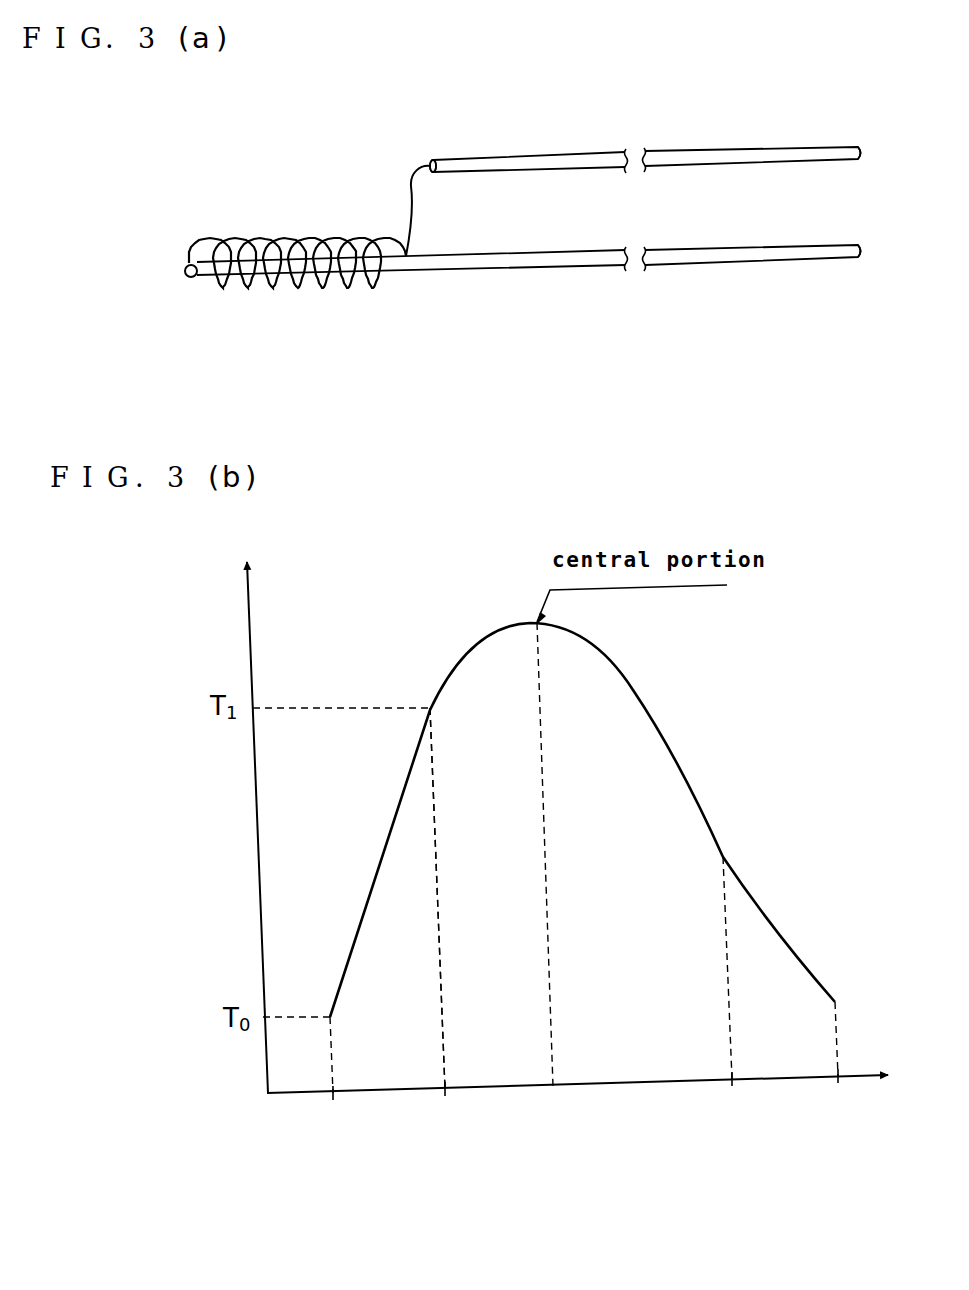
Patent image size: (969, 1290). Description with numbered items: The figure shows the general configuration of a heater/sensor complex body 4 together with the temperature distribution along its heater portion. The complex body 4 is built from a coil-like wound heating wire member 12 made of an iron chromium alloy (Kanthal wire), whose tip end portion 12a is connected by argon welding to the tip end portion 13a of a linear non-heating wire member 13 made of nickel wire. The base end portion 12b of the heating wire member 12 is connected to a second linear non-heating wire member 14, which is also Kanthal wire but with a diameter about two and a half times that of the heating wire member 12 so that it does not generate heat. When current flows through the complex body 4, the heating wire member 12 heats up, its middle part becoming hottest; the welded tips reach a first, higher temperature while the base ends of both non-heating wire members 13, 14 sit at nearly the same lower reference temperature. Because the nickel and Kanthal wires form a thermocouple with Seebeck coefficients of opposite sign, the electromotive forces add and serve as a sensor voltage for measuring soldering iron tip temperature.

The heater/sensor complex body 4 is at (548, 390).
The heating wire member 12 is at (188, 264).
The tip end portion of the heating wire member 12a is at (447, 936).
The base end portion of the heating wire member 12b is at (428, 163).
The non-heating wire member 13 is at (187, 280).
The tip end portion of the non-heating wire member 13a is at (447, 921).
The non-heating wire member 14 is at (720, 148).